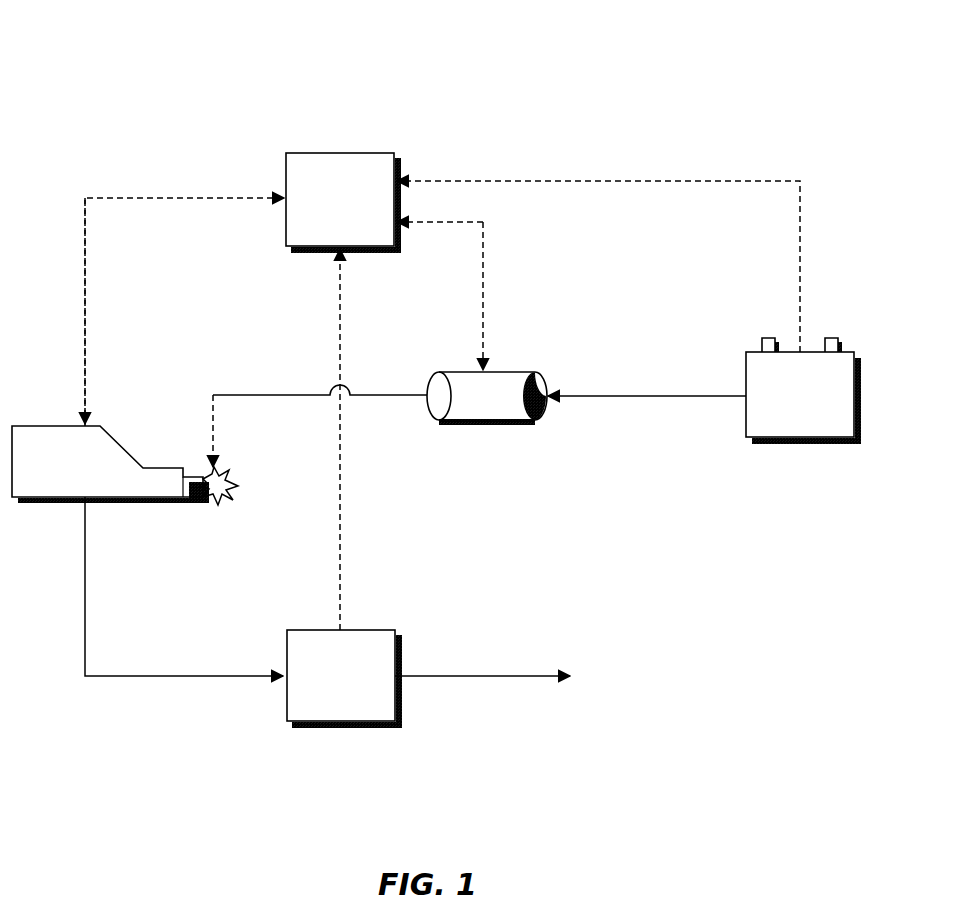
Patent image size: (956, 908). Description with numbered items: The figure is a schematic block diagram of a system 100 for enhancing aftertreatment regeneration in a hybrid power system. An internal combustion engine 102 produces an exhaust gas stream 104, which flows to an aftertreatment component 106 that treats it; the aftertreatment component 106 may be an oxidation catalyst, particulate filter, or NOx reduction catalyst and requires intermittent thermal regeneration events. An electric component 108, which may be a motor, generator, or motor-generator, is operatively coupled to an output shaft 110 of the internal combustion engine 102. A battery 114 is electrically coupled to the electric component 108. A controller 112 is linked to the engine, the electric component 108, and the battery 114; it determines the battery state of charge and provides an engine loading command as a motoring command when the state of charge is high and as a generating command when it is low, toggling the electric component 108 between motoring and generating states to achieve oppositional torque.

The system 100 is at (133, 64).
The internal combustion engine 102 is at (107, 475).
The exhaust gas stream 104 is at (186, 676).
The aftertreatment component 106 is at (363, 691).
The electric component 108 is at (510, 410).
The output shaft 110 is at (200, 476).
The controller 112 is at (362, 211).
The battery 114 is at (822, 410).